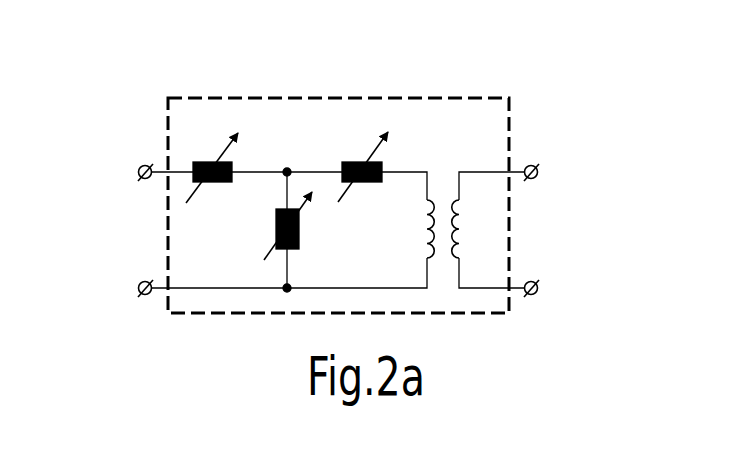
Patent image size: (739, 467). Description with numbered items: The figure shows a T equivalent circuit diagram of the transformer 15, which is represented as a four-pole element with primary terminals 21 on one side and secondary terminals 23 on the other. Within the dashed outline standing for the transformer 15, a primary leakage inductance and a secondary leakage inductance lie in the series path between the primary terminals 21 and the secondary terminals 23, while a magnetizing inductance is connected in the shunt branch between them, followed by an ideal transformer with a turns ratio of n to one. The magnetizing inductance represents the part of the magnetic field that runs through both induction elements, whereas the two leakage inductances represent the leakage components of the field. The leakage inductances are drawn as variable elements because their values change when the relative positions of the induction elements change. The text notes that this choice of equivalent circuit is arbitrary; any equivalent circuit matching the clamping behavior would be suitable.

The transformer 15 is at (393, 98).
The primary terminals 21 is at (140, 166).
The secondary terminals 23 is at (538, 166).